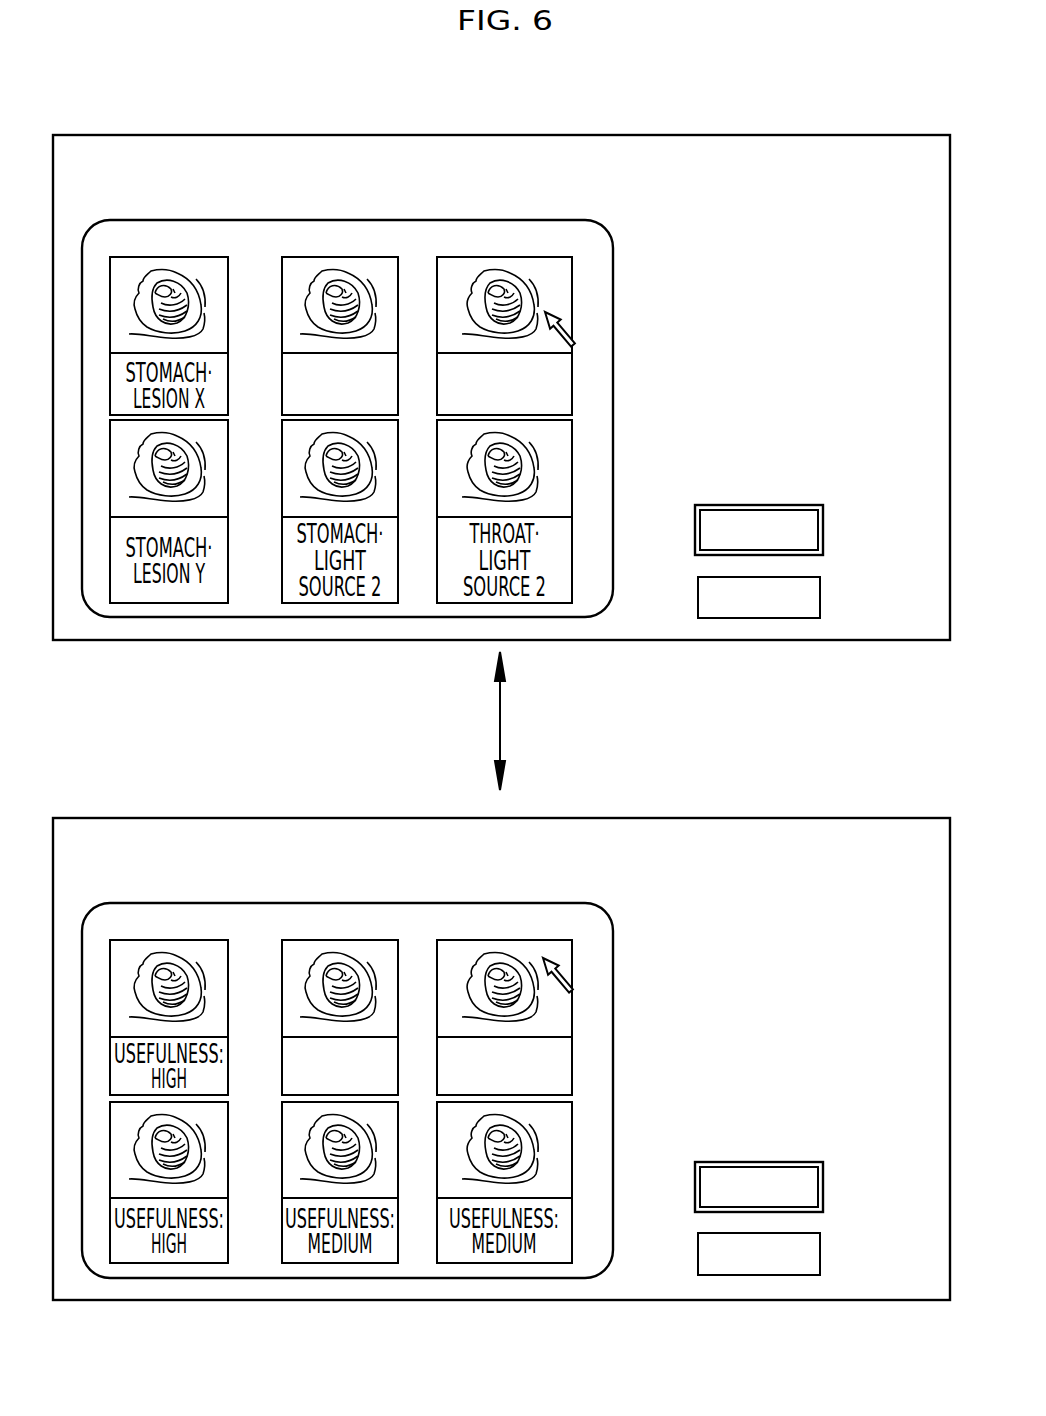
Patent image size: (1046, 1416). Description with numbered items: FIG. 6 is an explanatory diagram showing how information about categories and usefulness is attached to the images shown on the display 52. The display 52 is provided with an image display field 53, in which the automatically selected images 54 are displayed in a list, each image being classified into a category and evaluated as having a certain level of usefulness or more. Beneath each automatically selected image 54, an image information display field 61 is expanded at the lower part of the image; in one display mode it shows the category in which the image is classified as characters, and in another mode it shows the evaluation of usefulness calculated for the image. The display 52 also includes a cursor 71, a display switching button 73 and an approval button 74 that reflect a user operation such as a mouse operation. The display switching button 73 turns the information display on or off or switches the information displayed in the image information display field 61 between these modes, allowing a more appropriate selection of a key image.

The display 52 is at (70, 642).
The image display field 53 is at (185, 220).
The automatically selected image 54 is at (346, 257).
The image information display field 61 is at (572, 382).
The cursor 71 is at (573, 342).
The display switching button 73 is at (823, 530).
The approval button 74 is at (820, 598).